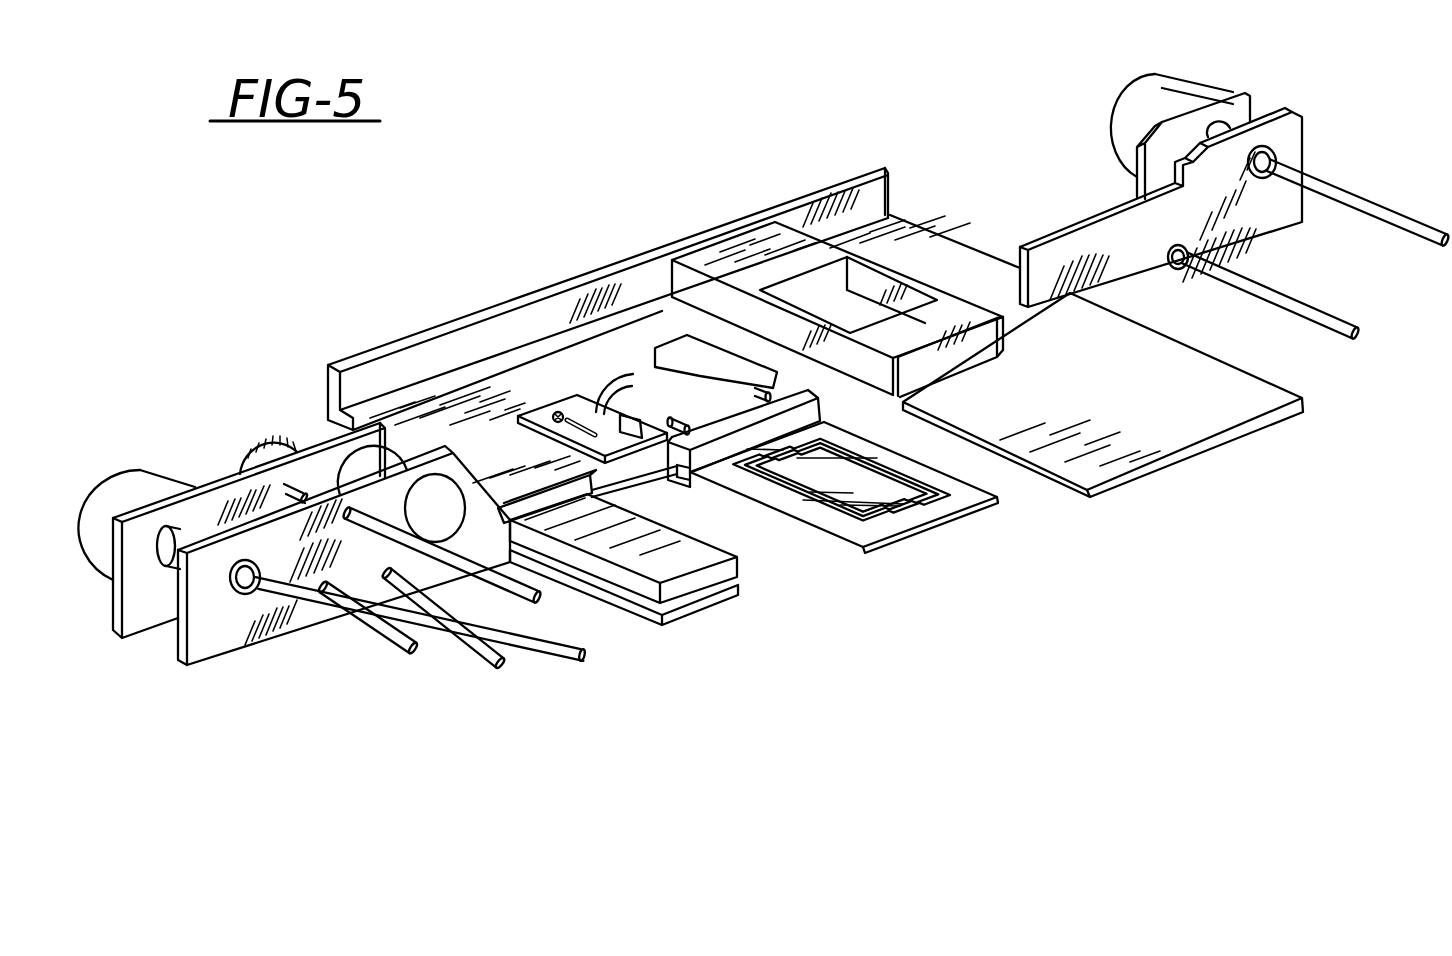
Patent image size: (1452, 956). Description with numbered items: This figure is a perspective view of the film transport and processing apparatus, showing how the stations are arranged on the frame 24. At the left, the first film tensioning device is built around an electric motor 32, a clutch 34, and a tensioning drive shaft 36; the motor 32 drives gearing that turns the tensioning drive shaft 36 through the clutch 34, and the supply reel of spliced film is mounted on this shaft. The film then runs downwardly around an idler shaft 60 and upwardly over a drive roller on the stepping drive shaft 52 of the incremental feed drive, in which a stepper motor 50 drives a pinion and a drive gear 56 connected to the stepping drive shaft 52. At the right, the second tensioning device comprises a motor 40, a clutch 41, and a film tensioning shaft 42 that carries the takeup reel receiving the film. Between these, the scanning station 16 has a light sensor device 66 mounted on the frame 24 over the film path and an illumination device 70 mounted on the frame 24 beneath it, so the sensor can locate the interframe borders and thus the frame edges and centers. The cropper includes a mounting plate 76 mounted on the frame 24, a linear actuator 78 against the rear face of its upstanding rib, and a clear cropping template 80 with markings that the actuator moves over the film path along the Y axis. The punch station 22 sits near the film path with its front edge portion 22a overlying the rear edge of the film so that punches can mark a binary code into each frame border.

The scanning station 16 is at (750, 609).
The punch station 22 is at (816, 316).
The front edge portion 22a is at (973, 350).
The frame 24 is at (212, 480).
The electric motor 32 is at (126, 480).
The clutch 34 is at (157, 563).
The tensioning drive shaft 36 is at (352, 632).
The motor 40 is at (1122, 126).
The clutch 41 is at (1236, 96).
The film tensioning shaft 42 is at (1362, 208).
The stepper motor 50 is at (390, 460).
The stepping drive shaft 52 is at (542, 594).
The drive gear 56 is at (282, 440).
The idler shaft 60 is at (466, 640).
The light sensor device 66 is at (707, 582).
The illumination device 70 is at (679, 612).
The mounting plate 76 is at (570, 404).
The linear actuator 78 is at (620, 372).
The cropping template 80 is at (947, 527).